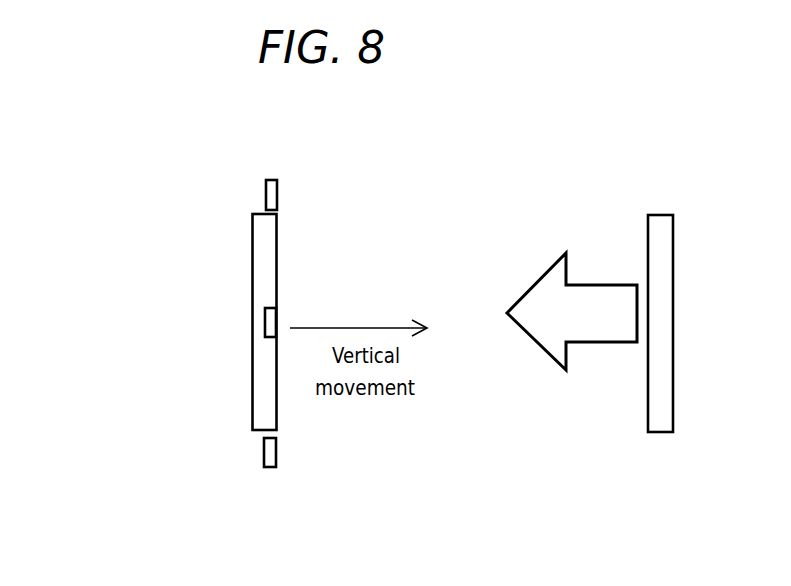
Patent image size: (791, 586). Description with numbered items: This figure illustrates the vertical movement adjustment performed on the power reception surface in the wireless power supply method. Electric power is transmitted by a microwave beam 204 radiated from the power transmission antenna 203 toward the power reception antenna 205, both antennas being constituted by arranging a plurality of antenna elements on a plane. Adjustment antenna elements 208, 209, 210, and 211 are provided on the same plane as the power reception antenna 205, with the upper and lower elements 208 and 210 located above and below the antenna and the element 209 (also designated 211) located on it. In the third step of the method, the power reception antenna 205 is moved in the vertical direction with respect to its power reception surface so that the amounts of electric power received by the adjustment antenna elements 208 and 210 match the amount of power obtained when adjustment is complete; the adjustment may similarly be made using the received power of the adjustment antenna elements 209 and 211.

The power transmission antenna 203 is at (648, 410).
The microwave beam 204 is at (547, 315).
The power reception antenna 205 is at (278, 260).
The adjustment antenna element 208 is at (270, 192).
The adjustment antenna element 209 is at (160, 296).
The adjustment antenna element 211 is at (264, 318).
The adjustment antenna element 210 is at (270, 450).